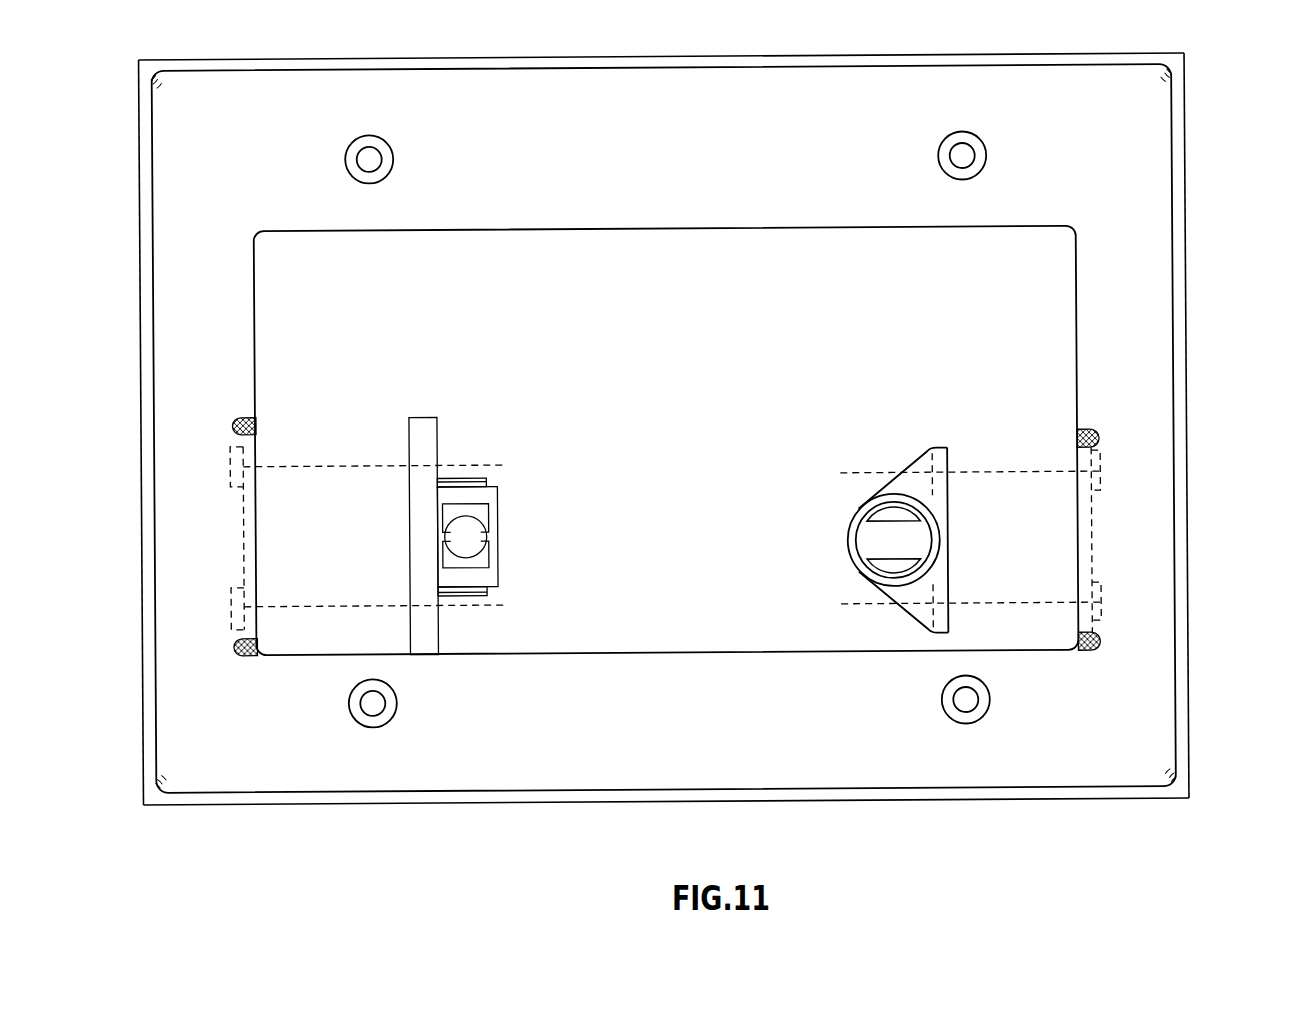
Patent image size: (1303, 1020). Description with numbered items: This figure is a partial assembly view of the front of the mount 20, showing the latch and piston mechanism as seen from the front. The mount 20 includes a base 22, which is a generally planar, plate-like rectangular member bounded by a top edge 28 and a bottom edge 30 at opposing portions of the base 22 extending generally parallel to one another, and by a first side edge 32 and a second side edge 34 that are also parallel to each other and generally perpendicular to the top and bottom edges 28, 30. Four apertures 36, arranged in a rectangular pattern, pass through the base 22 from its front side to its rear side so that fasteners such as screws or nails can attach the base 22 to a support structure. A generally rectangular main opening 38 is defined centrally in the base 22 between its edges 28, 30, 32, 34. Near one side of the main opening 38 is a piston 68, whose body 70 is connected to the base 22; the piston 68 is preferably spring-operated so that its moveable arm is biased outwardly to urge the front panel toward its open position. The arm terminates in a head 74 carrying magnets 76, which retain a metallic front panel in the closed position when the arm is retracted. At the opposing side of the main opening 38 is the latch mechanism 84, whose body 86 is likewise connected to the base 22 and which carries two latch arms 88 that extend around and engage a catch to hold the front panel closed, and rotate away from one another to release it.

The mount 20 is at (1200, 131).
The base 22 is at (1157, 205).
The top edge 28 is at (204, 59).
The bottom edge 30 is at (928, 800).
The first side edge 32 is at (1186, 481).
The second side edge 34 is at (141, 510).
The apertures 36 is at (962, 155).
The main opening 38 is at (846, 228).
The piston 68 is at (957, 456).
The body 70 is at (948, 548).
The head 74 is at (866, 533).
The magnets 76 is at (882, 519).
The latch mechanism 84 is at (497, 484).
The body 86 is at (425, 564).
The latch arms 88 is at (488, 512).